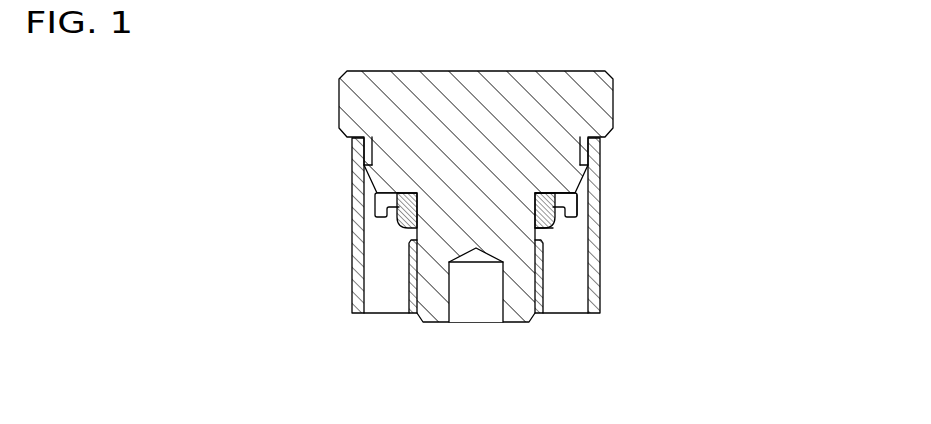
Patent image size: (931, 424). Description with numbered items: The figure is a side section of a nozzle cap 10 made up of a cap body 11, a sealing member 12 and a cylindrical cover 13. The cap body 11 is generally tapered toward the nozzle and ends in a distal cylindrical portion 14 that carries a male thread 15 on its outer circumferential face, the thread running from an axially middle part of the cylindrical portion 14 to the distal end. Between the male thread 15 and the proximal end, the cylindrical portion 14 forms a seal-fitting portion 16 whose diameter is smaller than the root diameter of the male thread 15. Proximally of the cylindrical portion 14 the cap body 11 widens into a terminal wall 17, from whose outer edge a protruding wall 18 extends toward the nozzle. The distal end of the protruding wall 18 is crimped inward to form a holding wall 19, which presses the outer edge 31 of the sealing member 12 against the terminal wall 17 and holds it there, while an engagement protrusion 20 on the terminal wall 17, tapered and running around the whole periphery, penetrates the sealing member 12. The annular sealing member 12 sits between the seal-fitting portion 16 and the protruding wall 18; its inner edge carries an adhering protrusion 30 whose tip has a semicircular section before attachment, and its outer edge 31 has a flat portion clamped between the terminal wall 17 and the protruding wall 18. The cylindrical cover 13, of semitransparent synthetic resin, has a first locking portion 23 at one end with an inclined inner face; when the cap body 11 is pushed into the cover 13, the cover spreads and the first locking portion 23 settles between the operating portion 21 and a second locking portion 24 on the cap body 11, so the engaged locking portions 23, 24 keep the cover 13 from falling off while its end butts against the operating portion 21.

The nozzle cap 10 is at (632, 87).
The cap body 11 is at (337, 82).
The sealing member 12 is at (220, 237).
The cylindrical cover 13 is at (348, 277).
The distal cylindrical portion 14 is at (437, 307).
The male thread 15 is at (412, 290).
The seal-fitting portion 16 is at (413, 230).
The terminal wall 17 is at (542, 192).
The protruding wall 18 is at (575, 203).
The holding wall 19 is at (560, 220).
The engagement protrusion 20 is at (393, 195).
The operating portion 21 is at (357, 104).
The first locking portion 23 is at (352, 155).
The second locking portion 24 is at (372, 180).
The adhering protrusion 30 is at (400, 222).
The outer edge 31 is at (378, 206).